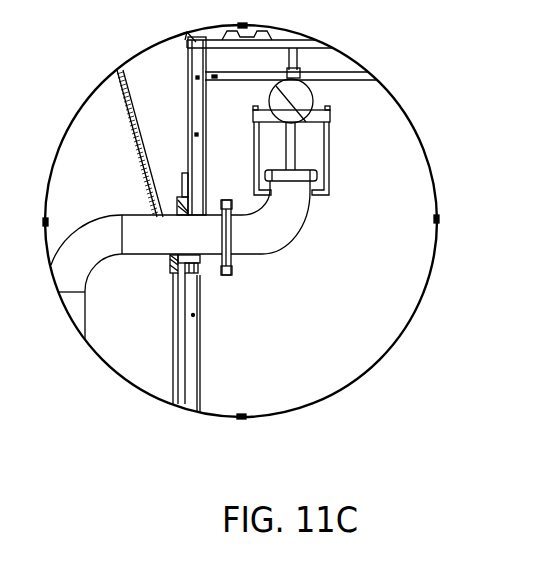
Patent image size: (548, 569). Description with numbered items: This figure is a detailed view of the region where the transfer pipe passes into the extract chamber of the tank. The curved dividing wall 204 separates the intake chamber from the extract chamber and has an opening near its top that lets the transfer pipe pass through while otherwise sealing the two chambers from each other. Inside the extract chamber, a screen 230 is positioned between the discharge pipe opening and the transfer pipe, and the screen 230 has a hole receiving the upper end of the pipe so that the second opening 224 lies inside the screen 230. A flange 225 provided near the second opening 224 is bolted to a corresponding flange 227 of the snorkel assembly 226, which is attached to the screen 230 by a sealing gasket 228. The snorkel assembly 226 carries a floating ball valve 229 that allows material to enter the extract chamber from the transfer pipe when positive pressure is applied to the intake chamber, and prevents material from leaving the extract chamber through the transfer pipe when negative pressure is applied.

The screen 230 is at (187, 92).
The dividing wall 204 is at (137, 120).
The floating ball valve 229 is at (295, 123).
The snorkel assembly 226 is at (295, 228).
The second opening 224 is at (205, 258).
The flange 225 is at (173, 263).
The sealing gasket 228 is at (193, 268).
The flange 227 is at (178, 268).